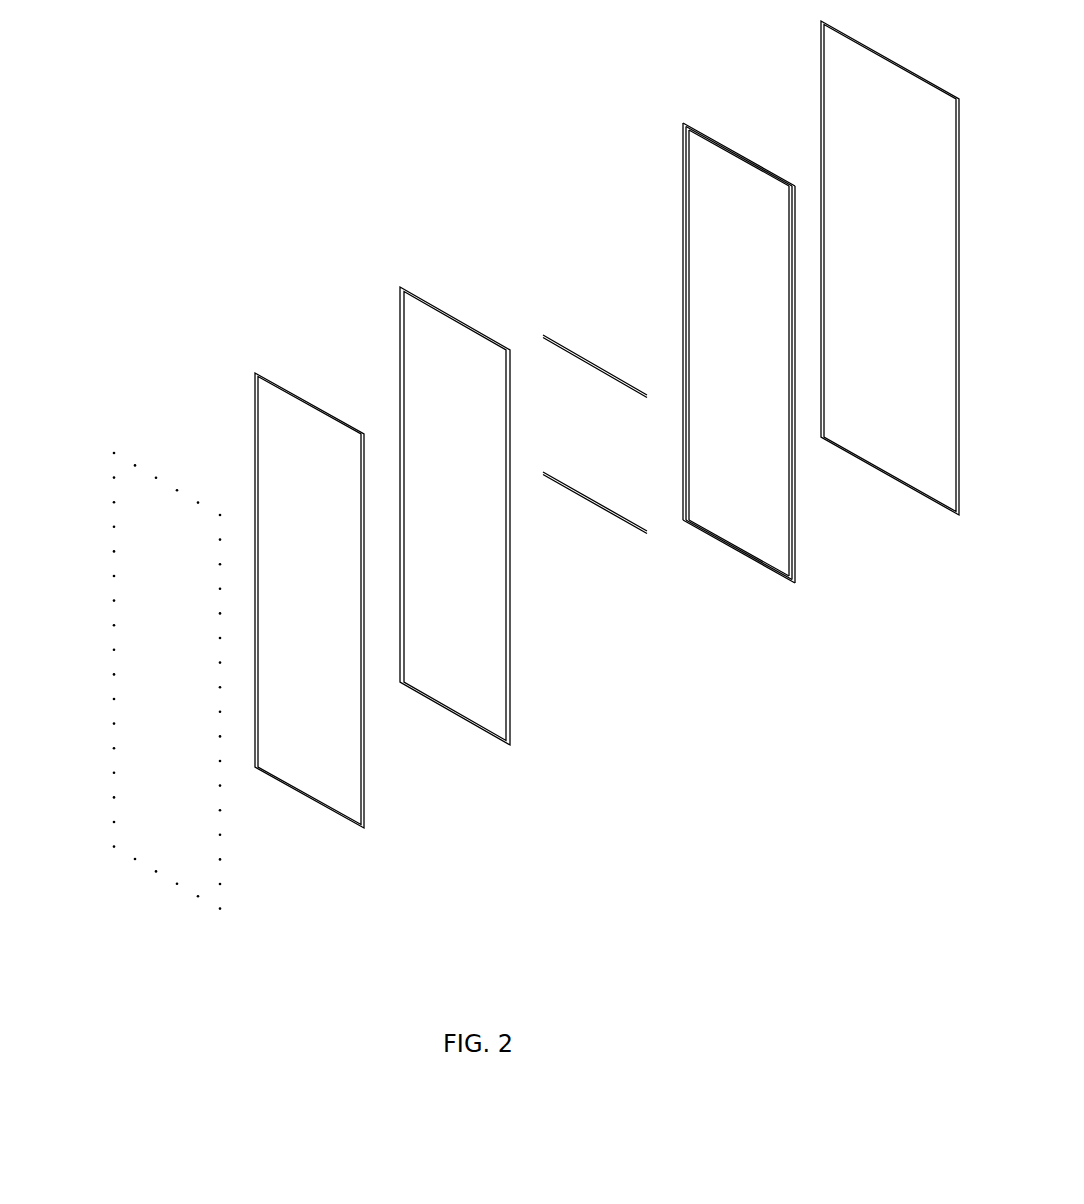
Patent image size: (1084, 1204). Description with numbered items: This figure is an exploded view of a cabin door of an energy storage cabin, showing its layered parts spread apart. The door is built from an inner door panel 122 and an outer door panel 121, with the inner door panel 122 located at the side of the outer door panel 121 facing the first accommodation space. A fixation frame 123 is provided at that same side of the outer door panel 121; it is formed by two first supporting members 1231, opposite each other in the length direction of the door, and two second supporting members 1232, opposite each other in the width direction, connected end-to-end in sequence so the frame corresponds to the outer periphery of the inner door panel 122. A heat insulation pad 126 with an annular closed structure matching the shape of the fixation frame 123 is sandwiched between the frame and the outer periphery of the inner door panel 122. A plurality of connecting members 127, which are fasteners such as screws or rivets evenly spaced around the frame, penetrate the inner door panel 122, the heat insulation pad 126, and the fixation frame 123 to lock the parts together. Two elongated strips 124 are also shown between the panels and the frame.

The outer door panel 121 is at (928, 475).
The inner door panel 122 is at (337, 802).
The fixation frame 123 is at (721, 388).
The first supporting member 1231 is at (745, 152).
The second supporting member 1232 is at (685, 203).
The spacer strip 124 is at (590, 360).
The heat insulation pad 126 is at (465, 720).
The connecting member 127 is at (158, 478).